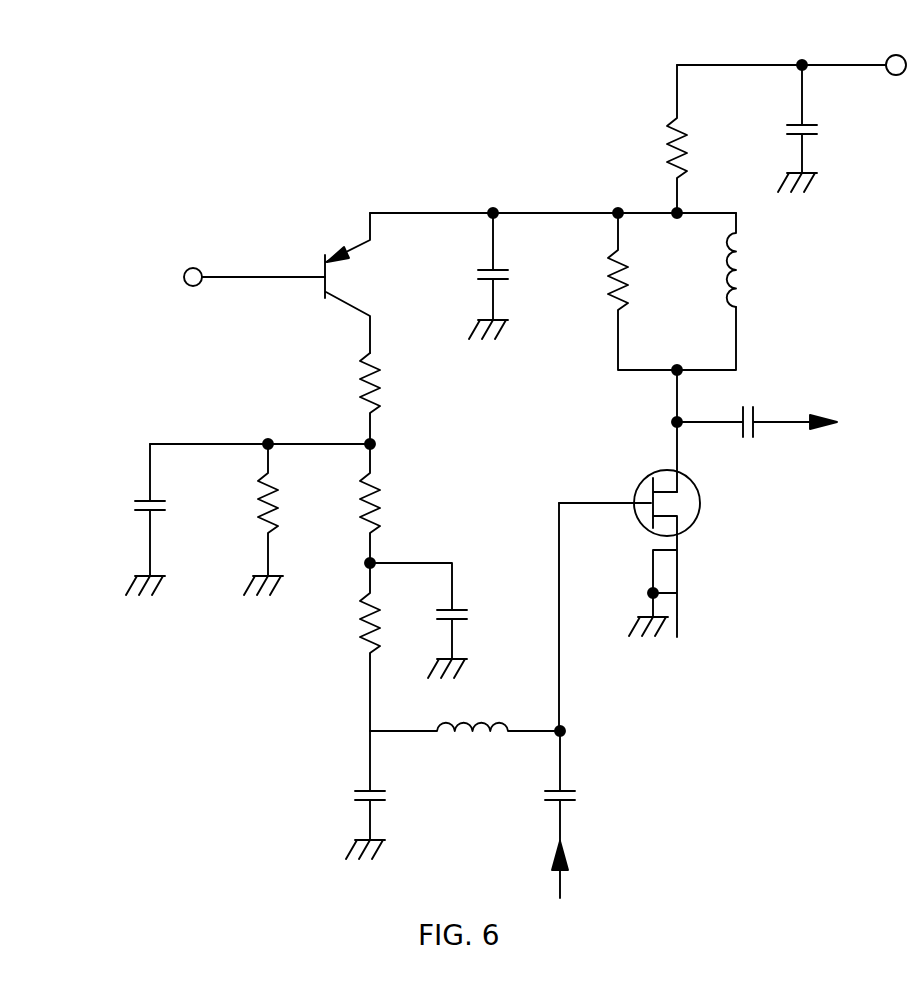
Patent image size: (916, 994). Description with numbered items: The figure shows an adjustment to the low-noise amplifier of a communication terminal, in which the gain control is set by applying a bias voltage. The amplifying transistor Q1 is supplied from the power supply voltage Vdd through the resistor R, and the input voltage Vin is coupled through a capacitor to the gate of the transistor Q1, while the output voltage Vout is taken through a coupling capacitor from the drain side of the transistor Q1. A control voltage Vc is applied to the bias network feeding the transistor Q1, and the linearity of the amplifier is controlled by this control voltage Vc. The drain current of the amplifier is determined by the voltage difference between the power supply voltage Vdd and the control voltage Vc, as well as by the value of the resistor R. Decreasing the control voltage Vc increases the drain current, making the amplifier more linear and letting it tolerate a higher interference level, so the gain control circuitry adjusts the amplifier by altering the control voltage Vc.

The power supply voltage Vdd is at (796, 108).
The resistor R is at (663, 139).
The control voltage Vc is at (236, 277).
The output voltage Vout is at (783, 422).
The transistor Q1 is at (649, 553).
The input voltage Vin is at (558, 832).